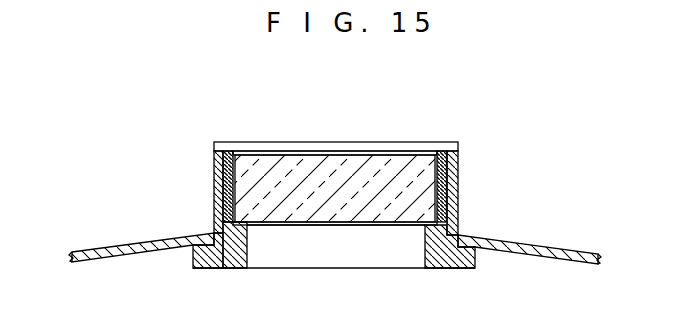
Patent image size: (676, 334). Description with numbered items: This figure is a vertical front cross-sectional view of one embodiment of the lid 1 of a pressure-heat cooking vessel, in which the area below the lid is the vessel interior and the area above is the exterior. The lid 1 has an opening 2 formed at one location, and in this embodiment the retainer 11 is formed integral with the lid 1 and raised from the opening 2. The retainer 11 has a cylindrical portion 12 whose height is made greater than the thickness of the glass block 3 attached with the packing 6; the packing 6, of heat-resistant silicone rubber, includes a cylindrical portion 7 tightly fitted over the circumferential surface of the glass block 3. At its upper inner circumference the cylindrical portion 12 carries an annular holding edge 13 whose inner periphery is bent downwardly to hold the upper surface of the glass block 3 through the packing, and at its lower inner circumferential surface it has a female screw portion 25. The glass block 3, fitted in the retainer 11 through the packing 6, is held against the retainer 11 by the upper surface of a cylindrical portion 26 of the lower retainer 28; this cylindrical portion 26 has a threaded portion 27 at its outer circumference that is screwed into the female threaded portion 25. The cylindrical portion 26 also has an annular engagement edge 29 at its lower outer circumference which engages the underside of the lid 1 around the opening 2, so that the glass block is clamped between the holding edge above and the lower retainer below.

The lid 1 is at (580, 252).
The opening 2 is at (457, 236).
The glass block 3 is at (372, 158).
The packing 6 is at (220, 152).
The cylindrical portion 7 is at (459, 158).
The retainer 11 is at (213, 170).
The cylindrical portion 12 is at (459, 181).
The annular holding edge 13 is at (226, 149).
The female screw portion 25 is at (220, 233).
The cylindrical portion 26 is at (433, 243).
The threaded portion 27 is at (226, 240).
The lower retainer 28 is at (476, 266).
The annular engagement edge 29 is at (193, 262).